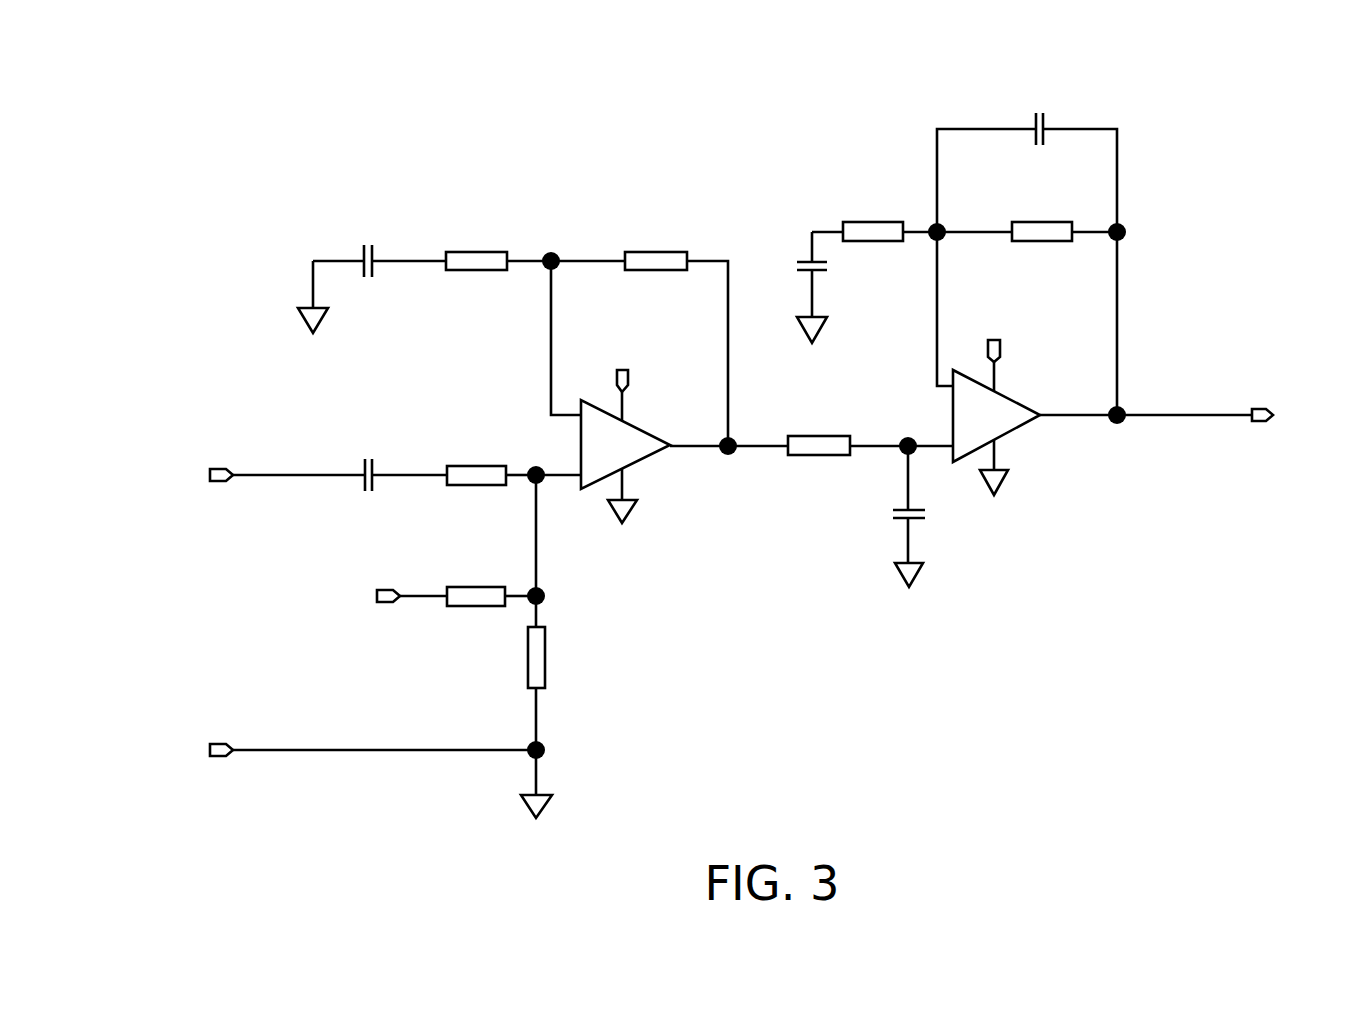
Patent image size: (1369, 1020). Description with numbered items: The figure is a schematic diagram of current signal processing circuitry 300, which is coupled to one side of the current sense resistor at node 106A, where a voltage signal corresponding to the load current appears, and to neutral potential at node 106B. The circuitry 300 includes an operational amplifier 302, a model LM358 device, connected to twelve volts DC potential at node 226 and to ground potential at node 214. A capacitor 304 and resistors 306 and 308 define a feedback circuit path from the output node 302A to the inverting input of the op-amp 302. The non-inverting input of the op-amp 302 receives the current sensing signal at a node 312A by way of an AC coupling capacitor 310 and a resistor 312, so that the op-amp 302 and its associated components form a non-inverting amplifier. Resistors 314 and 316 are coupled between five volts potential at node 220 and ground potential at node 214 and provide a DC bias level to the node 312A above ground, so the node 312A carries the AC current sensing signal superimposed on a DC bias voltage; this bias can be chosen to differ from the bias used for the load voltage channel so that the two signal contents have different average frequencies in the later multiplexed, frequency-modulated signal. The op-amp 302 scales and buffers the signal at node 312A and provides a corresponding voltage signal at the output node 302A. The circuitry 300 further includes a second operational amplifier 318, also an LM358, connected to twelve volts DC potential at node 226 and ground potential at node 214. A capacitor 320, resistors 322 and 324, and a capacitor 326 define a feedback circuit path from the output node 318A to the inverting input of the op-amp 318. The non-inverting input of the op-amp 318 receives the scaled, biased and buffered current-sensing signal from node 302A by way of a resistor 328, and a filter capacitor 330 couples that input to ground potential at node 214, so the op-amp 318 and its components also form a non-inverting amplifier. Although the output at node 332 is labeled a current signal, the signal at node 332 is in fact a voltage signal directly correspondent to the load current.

The current signal processing circuitry 300 is at (1160, 94).
The capacitor 304 is at (362, 254).
The resistor 306 is at (478, 252).
The resistor 308 is at (656, 252).
The ground potential node 214 is at (302, 320).
The AC coupling capacitor 310 is at (362, 463).
The resistor 312 is at (460, 466).
The node 312A is at (539, 467).
The node 106A is at (222, 483).
The twelve volts DC potential node 226 is at (630, 378).
The operational amplifier 302 is at (655, 455).
The output node 302A is at (730, 456).
The resistor 328 is at (838, 436).
The capacitor 320 is at (801, 262).
The resistor 322 is at (898, 222).
The resistor 324 is at (1043, 222).
The capacitor 326 is at (1032, 120).
The operational amplifier 318 is at (1035, 425).
The output node 318A is at (1118, 426).
The output node 332 is at (1262, 424).
The filter capacitor 330 is at (897, 520).
The resistor 314 is at (472, 587).
The five volts potential node 220 is at (388, 605).
The resistor 316 is at (528, 659).
The node 106B is at (222, 758).